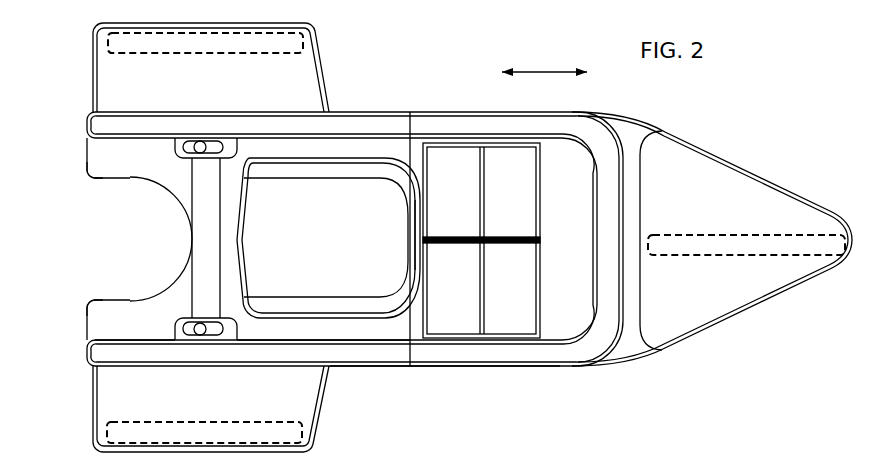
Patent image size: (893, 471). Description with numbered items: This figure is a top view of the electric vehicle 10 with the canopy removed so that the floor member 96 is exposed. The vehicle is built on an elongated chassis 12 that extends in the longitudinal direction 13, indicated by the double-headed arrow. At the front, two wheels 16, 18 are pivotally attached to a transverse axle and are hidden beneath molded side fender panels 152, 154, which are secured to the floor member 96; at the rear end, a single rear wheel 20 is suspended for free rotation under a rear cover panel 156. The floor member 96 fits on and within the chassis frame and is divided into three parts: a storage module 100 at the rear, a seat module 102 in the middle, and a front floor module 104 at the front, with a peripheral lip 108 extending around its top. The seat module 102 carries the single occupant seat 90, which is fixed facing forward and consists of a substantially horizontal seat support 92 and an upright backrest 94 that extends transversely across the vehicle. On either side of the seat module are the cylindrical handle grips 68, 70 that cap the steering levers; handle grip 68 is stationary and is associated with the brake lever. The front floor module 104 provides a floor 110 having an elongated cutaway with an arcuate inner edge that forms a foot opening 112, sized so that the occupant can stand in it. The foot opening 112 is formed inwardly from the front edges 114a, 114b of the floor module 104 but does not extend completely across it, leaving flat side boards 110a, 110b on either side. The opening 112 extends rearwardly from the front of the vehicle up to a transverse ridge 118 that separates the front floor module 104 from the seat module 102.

The electric vehicle 10 is at (442, 88).
The chassis 12 is at (466, 394).
The longitudinal direction 13 is at (547, 70).
The front wheel 16 is at (223, 56).
The front wheel 18 is at (241, 420).
The rear wheel 20 is at (776, 259).
The handle grip 68 is at (200, 143).
The handle grip 70 is at (200, 336).
The single occupant seat 90 is at (341, 158).
The seat support 92 is at (330, 247).
The backrest 94 is at (413, 240).
The floor member 96 is at (438, 369).
The storage module 100 is at (508, 320).
The seat module 102 is at (355, 342).
The front floor module 104 is at (110, 327).
The peripheral lip 108 is at (395, 122).
The floor 110 is at (99, 234).
The side board 110a is at (110, 305).
The side board 110b is at (110, 160).
The foot opening 112 is at (107, 238).
The front edge 114a is at (55, 307).
The front edge 114b is at (85, 154).
The transverse ridge 118 is at (197, 181).
The side fender panel 152 is at (108, 403).
The side fender panel 154 is at (107, 68).
The rear cover panel 156 is at (798, 208).